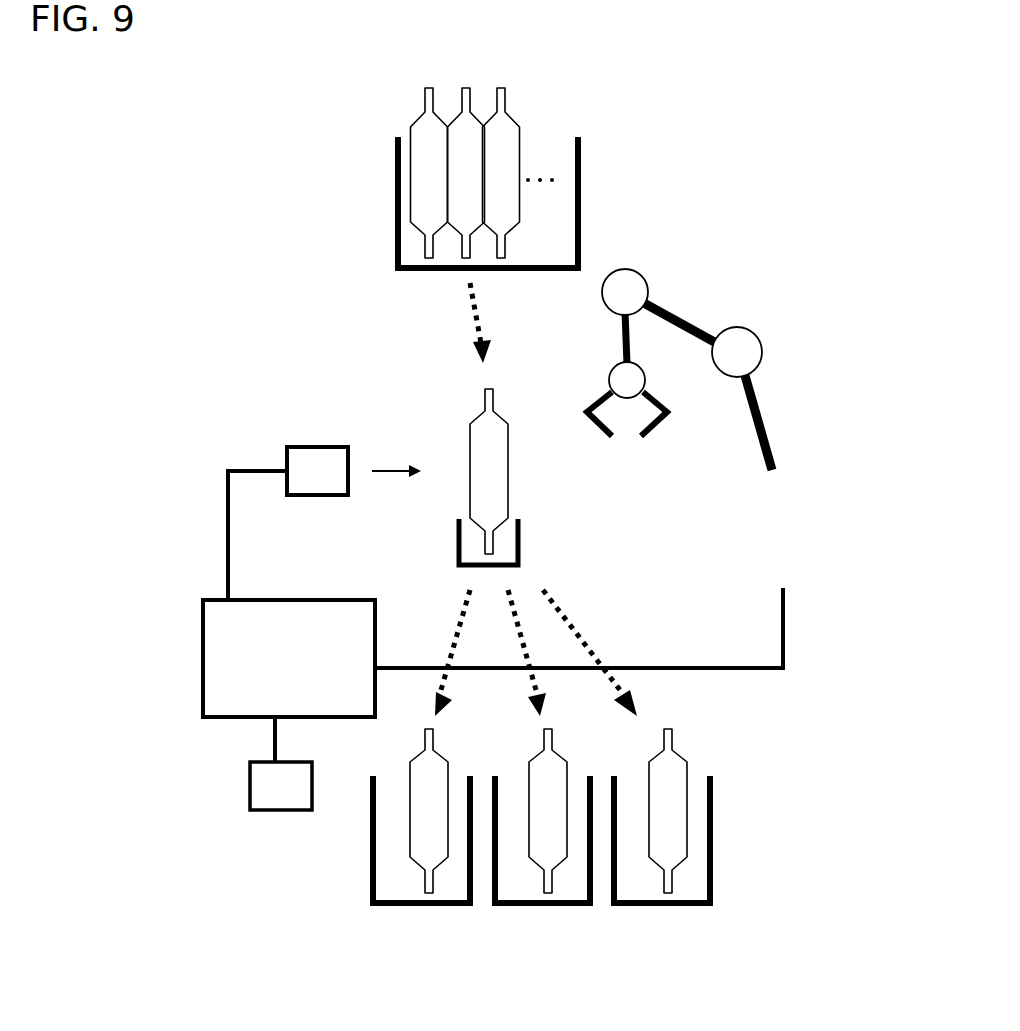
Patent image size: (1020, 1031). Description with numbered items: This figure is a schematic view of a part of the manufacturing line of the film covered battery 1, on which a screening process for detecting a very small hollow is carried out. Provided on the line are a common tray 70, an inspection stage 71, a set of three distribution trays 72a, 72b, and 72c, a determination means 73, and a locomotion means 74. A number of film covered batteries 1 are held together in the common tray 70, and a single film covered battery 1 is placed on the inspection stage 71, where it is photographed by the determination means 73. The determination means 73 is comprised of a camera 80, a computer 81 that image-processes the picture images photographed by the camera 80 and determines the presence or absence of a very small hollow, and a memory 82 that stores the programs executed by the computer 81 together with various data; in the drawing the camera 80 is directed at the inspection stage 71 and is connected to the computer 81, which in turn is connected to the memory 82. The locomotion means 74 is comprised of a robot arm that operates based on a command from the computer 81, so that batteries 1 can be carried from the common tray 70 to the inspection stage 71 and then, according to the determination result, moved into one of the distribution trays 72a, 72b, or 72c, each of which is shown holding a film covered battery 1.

The film covered battery 1 is at (520, 76).
The common tray 70 is at (581, 183).
The inspection stage 71 is at (520, 547).
The distribution tray 72a is at (420, 907).
The distribution tray 72b is at (545, 907).
The distribution tray 72c is at (650, 907).
The determination means 73 is at (427, 631).
The locomotion means 74 is at (789, 373).
The camera 80 is at (331, 447).
The computer 81 is at (203, 668).
The memory 82 is at (276, 812).